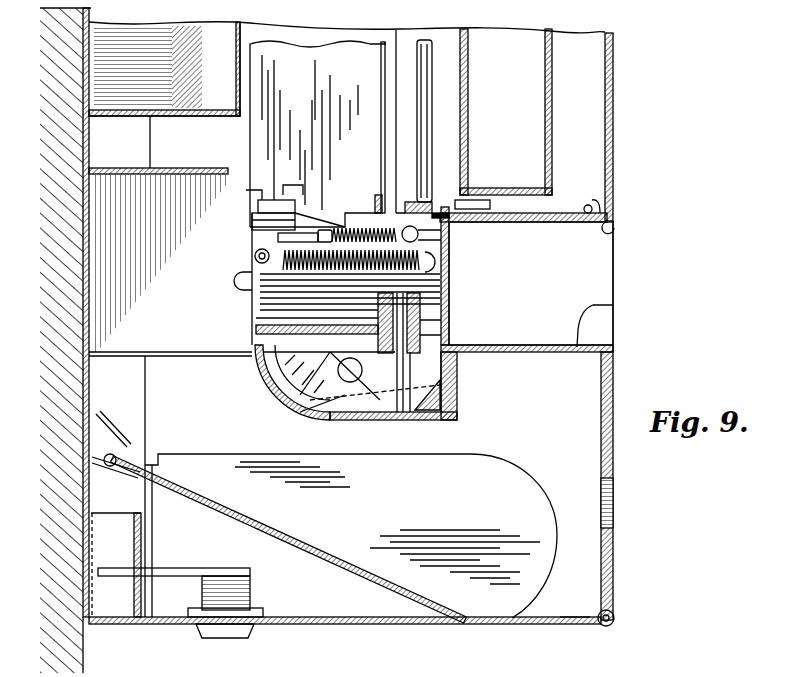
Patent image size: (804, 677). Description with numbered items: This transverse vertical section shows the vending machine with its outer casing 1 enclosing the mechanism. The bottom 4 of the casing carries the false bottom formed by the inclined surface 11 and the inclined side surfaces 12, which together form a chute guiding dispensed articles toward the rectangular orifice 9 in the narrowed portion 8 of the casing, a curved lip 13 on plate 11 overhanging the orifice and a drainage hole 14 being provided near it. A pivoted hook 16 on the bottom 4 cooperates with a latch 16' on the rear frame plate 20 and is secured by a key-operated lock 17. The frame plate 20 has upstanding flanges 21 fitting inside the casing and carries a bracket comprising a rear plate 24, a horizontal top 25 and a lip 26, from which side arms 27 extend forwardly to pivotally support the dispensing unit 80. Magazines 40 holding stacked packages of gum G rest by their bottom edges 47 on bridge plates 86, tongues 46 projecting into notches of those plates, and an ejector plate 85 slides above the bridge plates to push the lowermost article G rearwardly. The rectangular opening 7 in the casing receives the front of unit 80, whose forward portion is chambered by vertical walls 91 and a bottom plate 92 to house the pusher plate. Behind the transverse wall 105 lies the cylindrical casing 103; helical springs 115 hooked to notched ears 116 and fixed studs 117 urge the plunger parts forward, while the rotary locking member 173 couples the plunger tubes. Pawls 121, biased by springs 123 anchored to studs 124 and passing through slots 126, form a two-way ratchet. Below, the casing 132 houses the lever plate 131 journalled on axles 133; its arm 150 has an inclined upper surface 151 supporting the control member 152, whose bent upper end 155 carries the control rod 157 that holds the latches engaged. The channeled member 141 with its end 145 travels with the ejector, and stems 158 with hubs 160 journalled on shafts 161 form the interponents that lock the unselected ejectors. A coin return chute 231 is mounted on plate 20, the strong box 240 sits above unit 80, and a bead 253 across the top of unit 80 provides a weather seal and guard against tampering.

The outer casing 1 is at (613, 132).
The bottom 4 is at (428, 626).
The rectangular opening 7 is at (615, 230).
The lowermost narrowed portion 8 is at (258, 196).
The rectangular orifice 9 is at (612, 508).
The inclined surface 11 is at (330, 559).
The inclined side surfaces 12 is at (388, 584).
The curved lip 13 is at (614, 621).
The hole 14 is at (555, 618).
The pivoted hook 16 is at (174, 557).
The latch 16' is at (143, 565).
The key-operated lock 17 is at (250, 600).
The flanged plate 20 is at (84, 143).
The upstanding flanges 21 is at (104, 152).
The rear plate 24 is at (91, 291).
The horizontal top 25 is at (182, 178).
The flange 26 is at (112, 412).
The side arms 27 is at (185, 356).
The magazine 40 is at (252, 62).
The tongues 46 is at (310, 225).
The bottom edges 47 is at (345, 213).
The dispensing mechanism casing 80 is at (560, 213).
The article-ejecting plate 85 is at (486, 205).
The bridge plates 86 is at (385, 212).
The vertical walls 91 is at (588, 287).
The bottom plate 92 is at (613, 305).
The cylindrical casing 103 is at (447, 283).
The transverse wall 105 is at (466, 358).
The helical springs 115 is at (352, 268).
The notched ears 116 is at (256, 256).
The fixed studs 117 is at (447, 263).
The pawls 121 is at (252, 218).
The springs 123 is at (447, 250).
The fixed studs 124 is at (447, 240).
The slots 126 is at (267, 240).
The lever plate 131 is at (264, 380).
The casing 132 is at (292, 416).
The axles 133 is at (318, 400).
The channeled member 141 is at (275, 400).
The end portion 145 is at (262, 315).
The arm 150 is at (422, 418).
The upper end surface 151 is at (440, 392).
The control member 152 is at (449, 326).
The upper end 155 is at (432, 200).
The control rod 157 is at (430, 98).
The pivoted stems 158 is at (265, 331).
The hub 160 is at (447, 300).
The upstanding shaft 161 is at (402, 325).
The rotary locking member 173 is at (243, 280).
The coin return chute 231 is at (108, 74).
The strong box 240 is at (553, 105).
The bead 253 is at (590, 200).
The package of chewing gum G is at (270, 192).